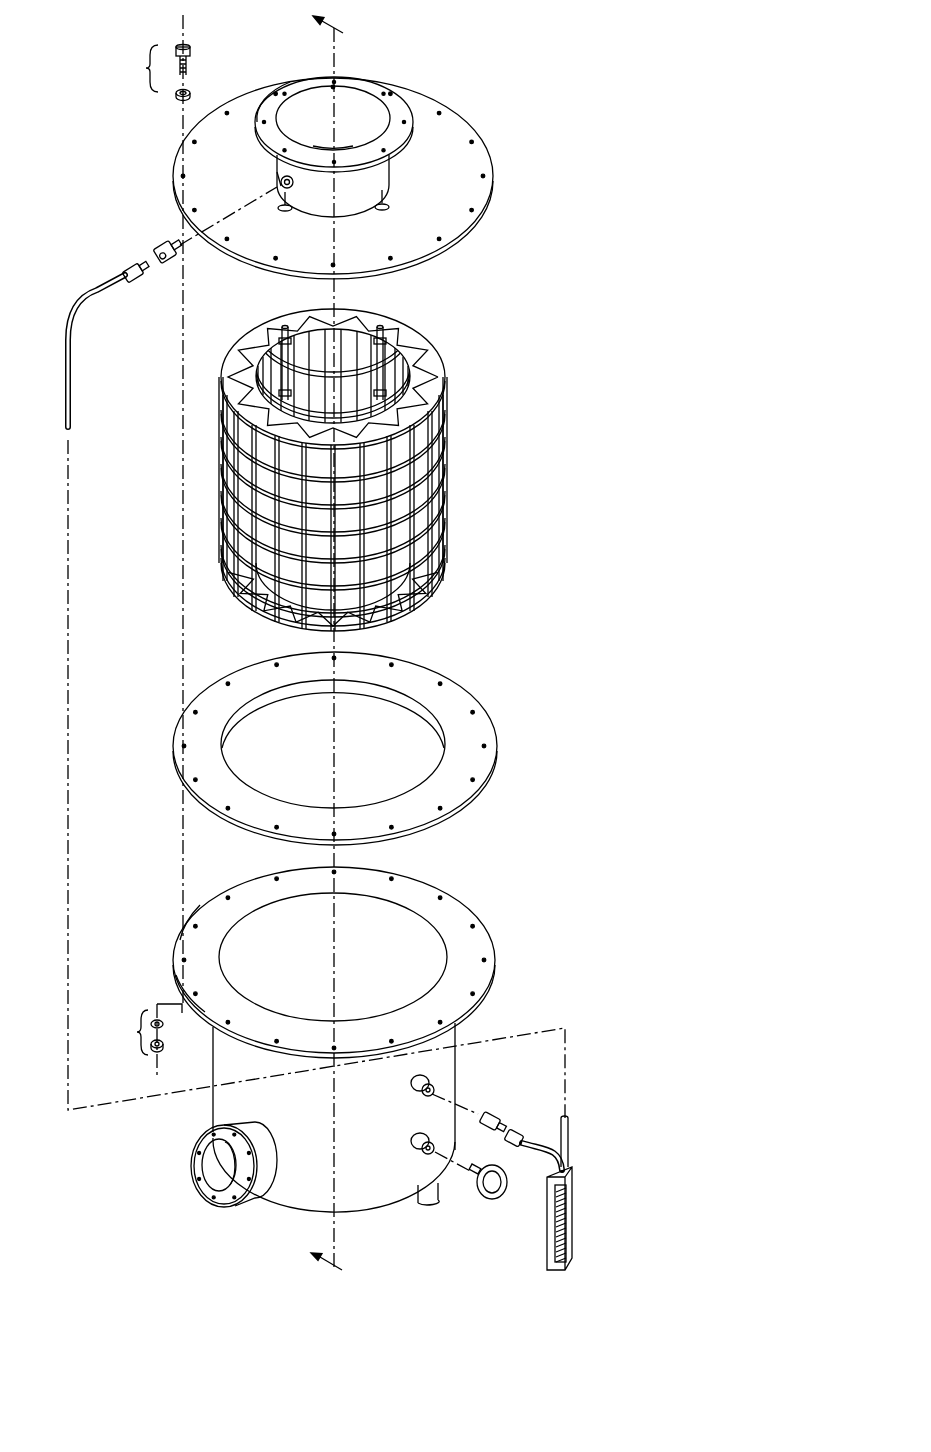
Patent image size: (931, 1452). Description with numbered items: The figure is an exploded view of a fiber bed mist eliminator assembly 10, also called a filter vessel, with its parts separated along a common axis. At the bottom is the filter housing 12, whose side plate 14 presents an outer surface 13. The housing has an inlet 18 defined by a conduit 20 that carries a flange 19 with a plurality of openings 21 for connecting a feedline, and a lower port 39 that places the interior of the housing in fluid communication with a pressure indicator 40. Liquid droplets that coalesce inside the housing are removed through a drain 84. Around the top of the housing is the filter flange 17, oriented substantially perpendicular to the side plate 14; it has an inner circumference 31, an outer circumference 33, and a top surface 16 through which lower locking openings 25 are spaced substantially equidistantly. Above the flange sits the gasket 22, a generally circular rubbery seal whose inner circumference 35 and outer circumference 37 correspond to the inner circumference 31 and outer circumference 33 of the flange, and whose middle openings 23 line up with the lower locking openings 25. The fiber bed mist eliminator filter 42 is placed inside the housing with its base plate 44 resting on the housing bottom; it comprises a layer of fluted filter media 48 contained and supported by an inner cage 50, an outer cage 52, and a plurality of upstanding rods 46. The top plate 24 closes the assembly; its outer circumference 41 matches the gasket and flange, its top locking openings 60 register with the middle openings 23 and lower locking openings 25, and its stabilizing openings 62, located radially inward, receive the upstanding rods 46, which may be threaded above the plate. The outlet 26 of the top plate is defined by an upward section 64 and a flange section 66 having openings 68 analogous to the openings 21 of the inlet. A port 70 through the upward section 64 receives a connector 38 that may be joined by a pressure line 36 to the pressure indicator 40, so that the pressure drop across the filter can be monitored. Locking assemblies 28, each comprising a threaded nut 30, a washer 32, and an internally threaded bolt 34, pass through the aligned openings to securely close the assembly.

The fiber bed mist eliminator assembly 10 is at (587, 489).
The filter housing 12 is at (335, 962).
The outer surface 13 is at (370, 1086).
The side plate 14 is at (329, 1133).
The top surface 16 is at (200, 982).
The filter flange 17 is at (488, 925).
The inlet 18 is at (198, 1175).
The flange 19 is at (226, 1208).
The conduit 20 is at (238, 1125).
The openings 21 is at (218, 1202).
The gasket 22 is at (345, 748).
The middle openings 23 is at (196, 715).
The top plate 24 is at (367, 158).
The lower locking openings 25 is at (200, 920).
The outlet 26 is at (362, 115).
The locking assemblies 28 is at (154, 545).
The threaded nut 30 is at (181, 45).
The inner circumference 31 is at (222, 958).
The washer 32 is at (180, 100).
The outer circumference 33 is at (180, 945).
The internally threaded bolt 34 is at (161, 1050).
The inner circumference 35 is at (222, 752).
The pressure line 36 is at (78, 305).
The outer circumference 37 is at (175, 728).
The connector 38 is at (162, 246).
The lower port 39 is at (418, 1087).
The pressure indicator 40 is at (575, 1230).
The outer circumference 41 is at (488, 140).
The fiber bed mist eliminator filter 42 is at (320, 460).
The base plate 44 is at (235, 596).
The upstanding rods 46 is at (284, 336).
The fluted filter media 48 is at (235, 392).
The inner cage 50 is at (235, 360).
The outer cage 52 is at (275, 418).
The top locking openings 60 is at (492, 175).
The stabilizing openings 62 is at (392, 208).
The upward section 64 is at (325, 205).
The flange section 66 is at (275, 105).
The openings 68 is at (408, 118).
The port 70 is at (283, 180).
The drain 84 is at (435, 1195).